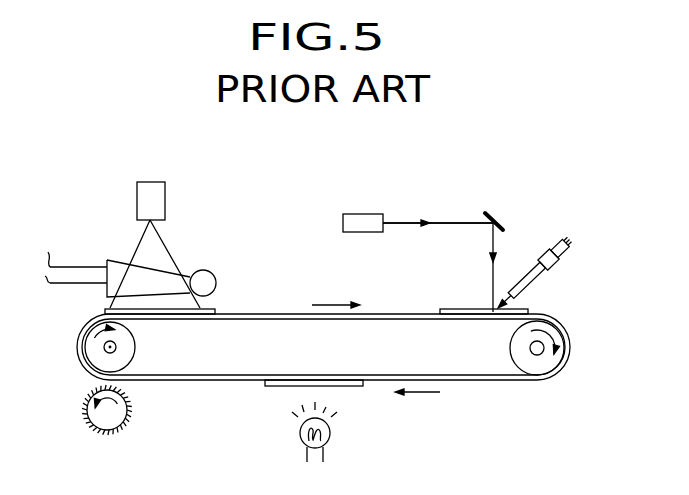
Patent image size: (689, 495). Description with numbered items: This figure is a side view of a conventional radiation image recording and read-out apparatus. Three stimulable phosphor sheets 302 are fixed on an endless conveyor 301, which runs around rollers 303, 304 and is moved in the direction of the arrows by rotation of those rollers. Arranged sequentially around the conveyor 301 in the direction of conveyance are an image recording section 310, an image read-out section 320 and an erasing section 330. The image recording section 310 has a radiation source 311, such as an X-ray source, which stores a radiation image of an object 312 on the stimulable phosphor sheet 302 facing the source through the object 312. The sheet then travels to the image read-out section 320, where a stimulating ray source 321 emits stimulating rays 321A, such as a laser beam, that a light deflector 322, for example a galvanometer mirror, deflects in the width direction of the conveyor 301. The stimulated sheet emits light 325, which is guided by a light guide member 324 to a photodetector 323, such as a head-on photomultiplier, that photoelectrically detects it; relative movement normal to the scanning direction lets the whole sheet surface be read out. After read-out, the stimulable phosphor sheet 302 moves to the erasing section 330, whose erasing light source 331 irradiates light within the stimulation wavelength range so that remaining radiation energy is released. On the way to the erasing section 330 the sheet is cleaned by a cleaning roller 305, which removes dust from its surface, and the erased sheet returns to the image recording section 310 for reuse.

The endless conveyor 301 is at (538, 382).
The stimulable phosphor sheet 302 is at (215, 311).
The roller 303 is at (563, 358).
The roller 304 is at (92, 352).
The cleaning roller 305 is at (117, 415).
The image recording section 310 is at (188, 187).
The radiation source 311 is at (165, 209).
The object 312 is at (120, 258).
The image read-out section 320 is at (548, 199).
The stimulating ray source 321 is at (370, 233).
The stimulating rays 321A is at (413, 227).
The light deflector 322 is at (493, 212).
The photodetector 323 is at (554, 253).
The light guide member 324 is at (522, 277).
The emitted light 325 is at (500, 312).
The erasing section 330 is at (348, 437).
The erasing light source 331 is at (299, 430).